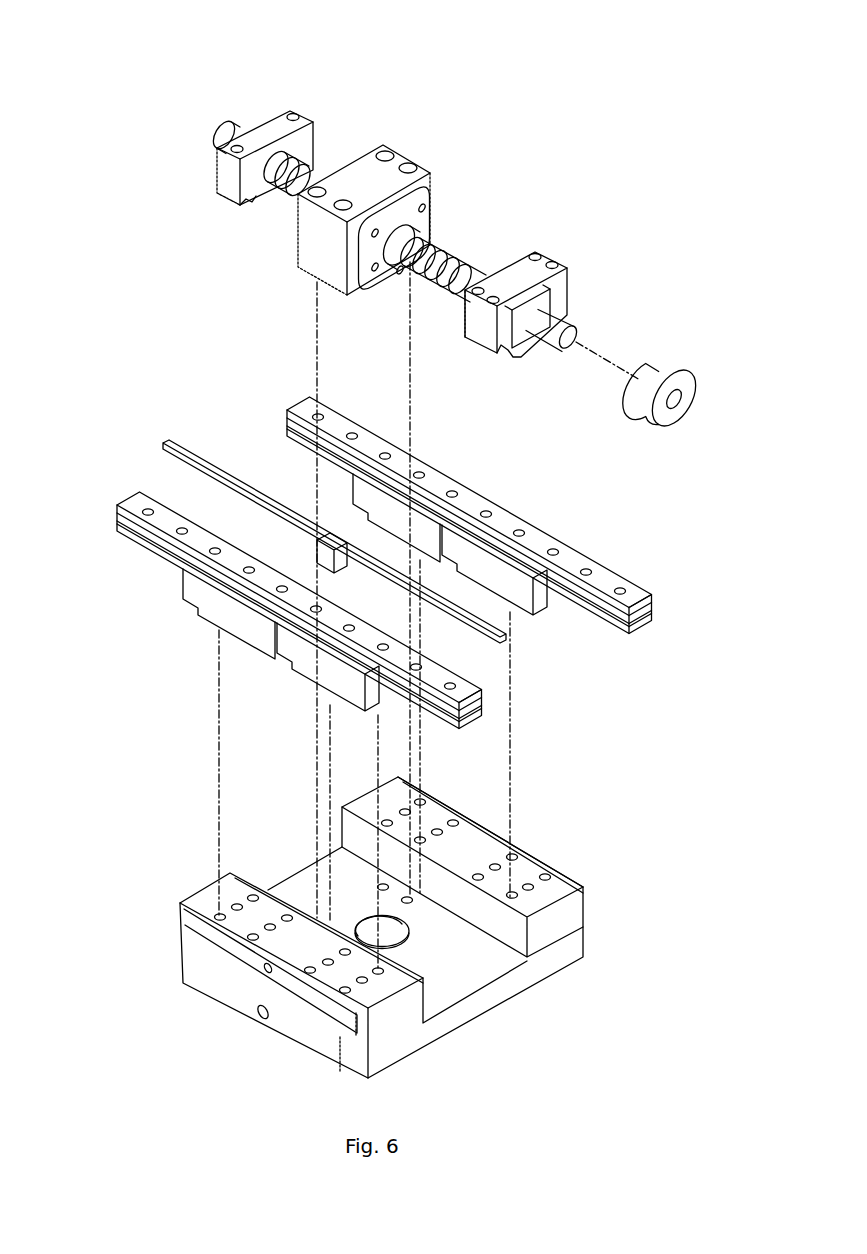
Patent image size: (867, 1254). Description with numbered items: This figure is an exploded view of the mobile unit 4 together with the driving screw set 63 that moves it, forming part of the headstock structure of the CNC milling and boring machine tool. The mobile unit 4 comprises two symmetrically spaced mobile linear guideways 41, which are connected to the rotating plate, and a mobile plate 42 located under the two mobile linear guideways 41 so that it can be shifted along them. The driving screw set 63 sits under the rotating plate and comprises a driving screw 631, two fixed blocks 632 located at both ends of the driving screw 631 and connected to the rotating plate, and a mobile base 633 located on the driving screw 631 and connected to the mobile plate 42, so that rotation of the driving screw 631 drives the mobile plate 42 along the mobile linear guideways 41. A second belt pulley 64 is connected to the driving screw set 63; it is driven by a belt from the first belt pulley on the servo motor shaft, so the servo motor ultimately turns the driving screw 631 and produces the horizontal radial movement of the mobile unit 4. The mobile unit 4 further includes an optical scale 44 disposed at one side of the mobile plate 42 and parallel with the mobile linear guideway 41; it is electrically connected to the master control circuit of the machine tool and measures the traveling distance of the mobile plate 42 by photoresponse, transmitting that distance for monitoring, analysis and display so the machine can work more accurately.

The mobile unit 4 is at (78, 361).
The mobile linear guideway 41 is at (288, 422).
The mobile plate 42 is at (212, 900).
The optical scale 44 is at (168, 443).
The driving screw set 63 is at (643, 180).
The driving screw 631 is at (463, 243).
The fixed block 632 is at (270, 128).
The mobile base 633 is at (372, 170).
The second belt pulley 64 is at (670, 375).